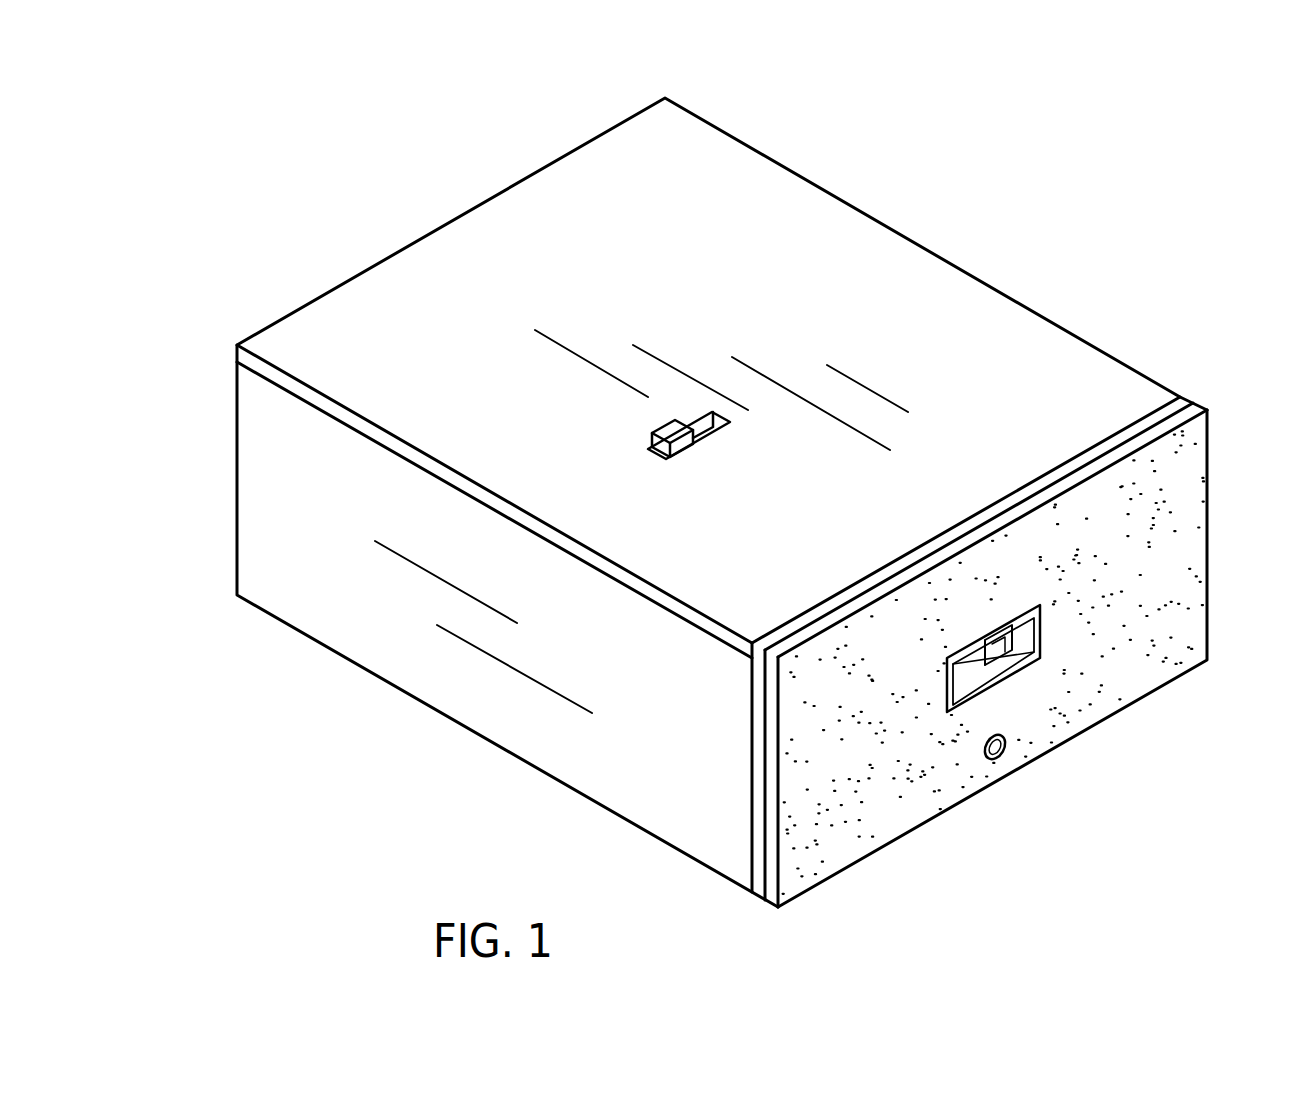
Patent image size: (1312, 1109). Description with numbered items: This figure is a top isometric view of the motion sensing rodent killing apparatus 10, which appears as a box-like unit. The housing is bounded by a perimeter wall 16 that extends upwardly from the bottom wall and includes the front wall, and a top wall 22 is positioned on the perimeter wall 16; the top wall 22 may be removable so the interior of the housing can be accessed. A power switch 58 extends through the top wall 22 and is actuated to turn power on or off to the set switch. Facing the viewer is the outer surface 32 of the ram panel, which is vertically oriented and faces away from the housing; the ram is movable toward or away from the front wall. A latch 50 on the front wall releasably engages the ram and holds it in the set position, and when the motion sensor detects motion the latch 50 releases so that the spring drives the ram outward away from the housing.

The motion sensing rodent killing apparatus 10 is at (1153, 132).
The perimeter wall 16 is at (237, 462).
The top wall 22 is at (1050, 373).
The outer surface 32 is at (1117, 618).
The latch 50 is at (1003, 652).
The power switch 58 is at (675, 428).